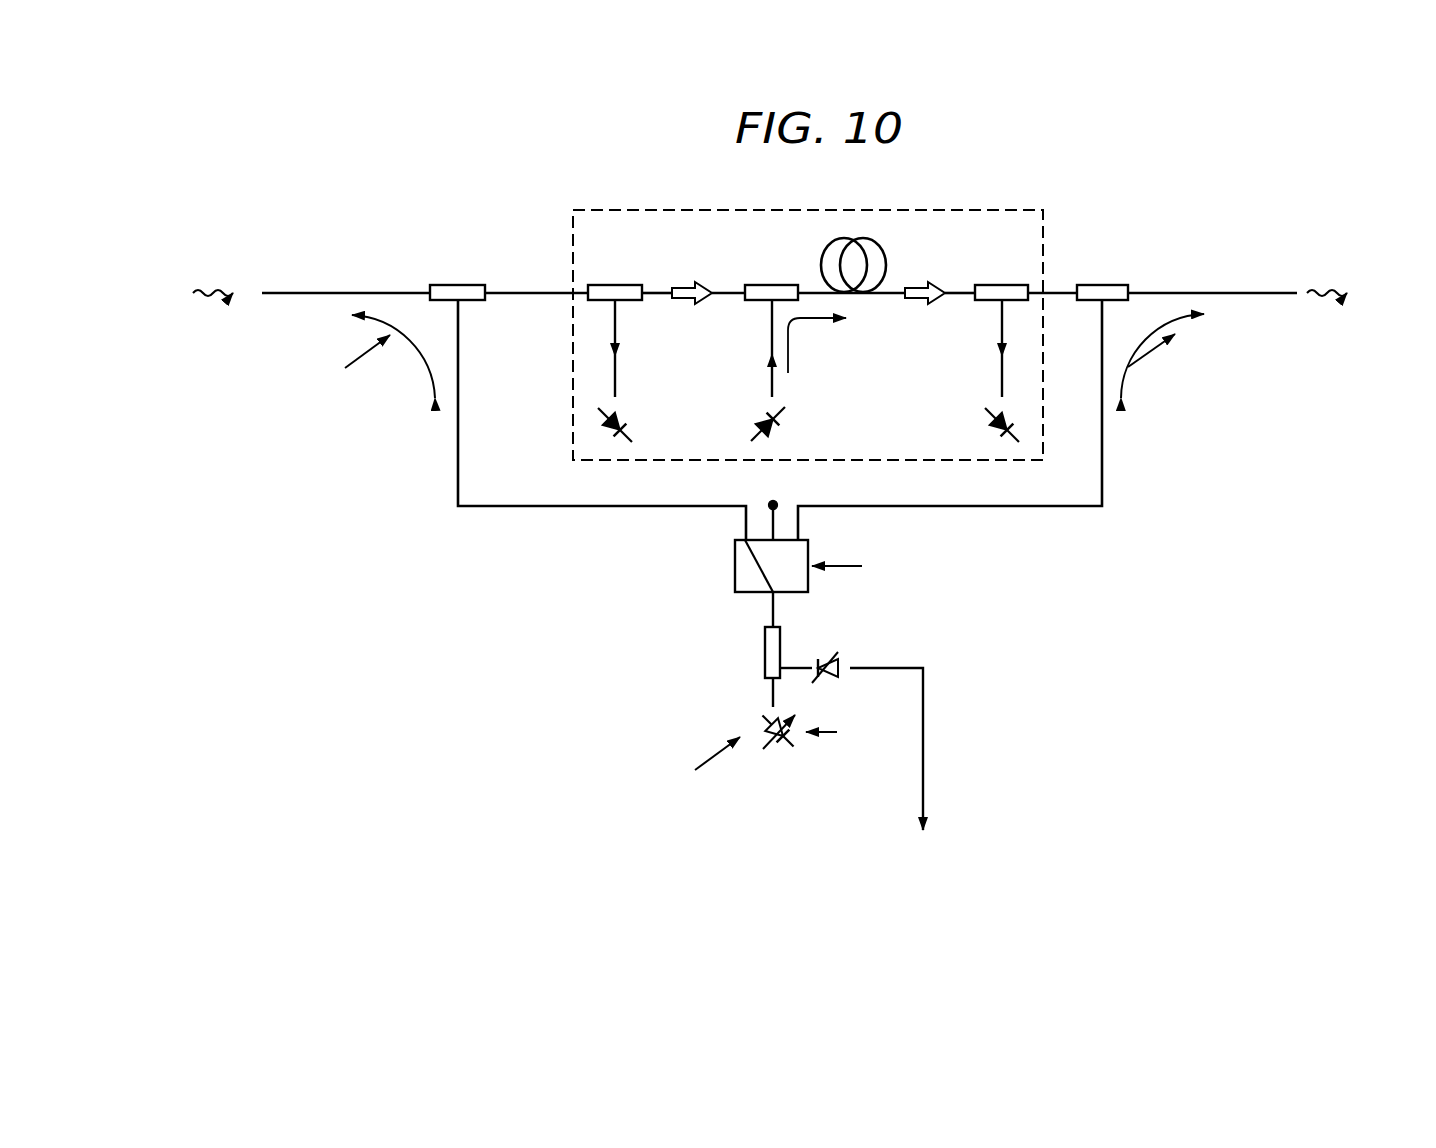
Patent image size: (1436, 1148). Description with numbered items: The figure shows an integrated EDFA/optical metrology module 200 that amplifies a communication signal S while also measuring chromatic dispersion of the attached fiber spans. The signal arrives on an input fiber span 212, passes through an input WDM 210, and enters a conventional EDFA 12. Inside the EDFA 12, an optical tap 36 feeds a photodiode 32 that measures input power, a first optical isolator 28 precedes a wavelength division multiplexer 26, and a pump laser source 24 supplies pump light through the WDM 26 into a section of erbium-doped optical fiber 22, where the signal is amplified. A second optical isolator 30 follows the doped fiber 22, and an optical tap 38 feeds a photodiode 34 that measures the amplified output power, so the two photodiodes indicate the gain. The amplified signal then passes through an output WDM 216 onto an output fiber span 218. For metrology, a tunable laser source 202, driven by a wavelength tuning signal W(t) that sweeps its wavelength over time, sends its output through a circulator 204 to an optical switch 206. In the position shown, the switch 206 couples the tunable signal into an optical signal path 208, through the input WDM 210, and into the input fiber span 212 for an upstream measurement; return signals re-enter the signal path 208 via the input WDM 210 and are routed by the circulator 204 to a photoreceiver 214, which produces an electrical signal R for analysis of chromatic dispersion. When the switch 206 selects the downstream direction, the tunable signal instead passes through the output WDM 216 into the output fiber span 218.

The integrated EDFA/optical metrology module 200 is at (1354, 181).
The EDFA 12 is at (740, 210).
The erbium-doped optical fiber 22 is at (886, 254).
The pump laser source 24 is at (760, 418).
The wavelength division multiplexer 26 is at (768, 284).
The first optical isolator 28 is at (681, 300).
The second optical isolator 30 is at (914, 300).
The photodiode 32 is at (624, 418).
The photodiode 34 is at (985, 425).
The optical tap 36 is at (610, 284).
The optical tap 38 is at (995, 284).
The tunable laser source 202 is at (780, 743).
The circulator 204 is at (764, 650).
The optical switch 206 is at (734, 564).
The optical signal path 208 is at (457, 460).
The input WDM 210 is at (450, 284).
The input fiber span 212 is at (287, 290).
The photoreceiver 214 is at (848, 664).
The output WDM 216 is at (1093, 284).
The output fiber span 218 is at (1275, 290).